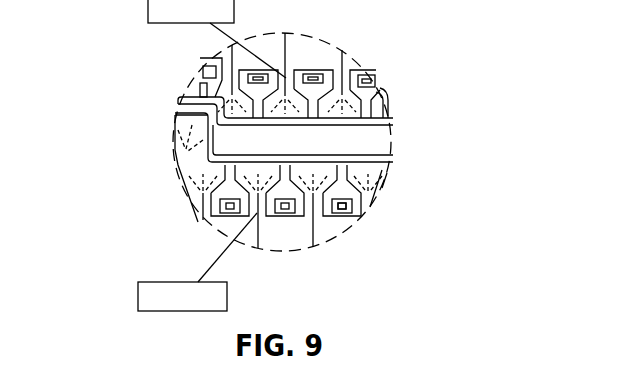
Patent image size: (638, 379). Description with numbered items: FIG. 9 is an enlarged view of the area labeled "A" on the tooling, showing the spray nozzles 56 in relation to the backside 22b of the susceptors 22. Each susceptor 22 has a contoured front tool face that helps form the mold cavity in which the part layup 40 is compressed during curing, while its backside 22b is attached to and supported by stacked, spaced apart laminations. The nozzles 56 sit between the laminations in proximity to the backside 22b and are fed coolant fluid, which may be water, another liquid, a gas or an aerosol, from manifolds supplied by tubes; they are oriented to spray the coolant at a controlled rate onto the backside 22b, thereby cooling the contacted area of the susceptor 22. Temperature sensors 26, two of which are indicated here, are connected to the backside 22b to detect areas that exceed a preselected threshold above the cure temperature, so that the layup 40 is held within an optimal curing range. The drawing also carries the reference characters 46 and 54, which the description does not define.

The susceptor 22 is at (386, 103).
The backside 22b is at (230, 106).
The temperature sensor 26 is at (148, 11).
The part layup 40 is at (372, 143).
The detection region 46 is at (377, 188).
The electrode 54 is at (338, 209).
The nozzle 56 is at (355, 93).